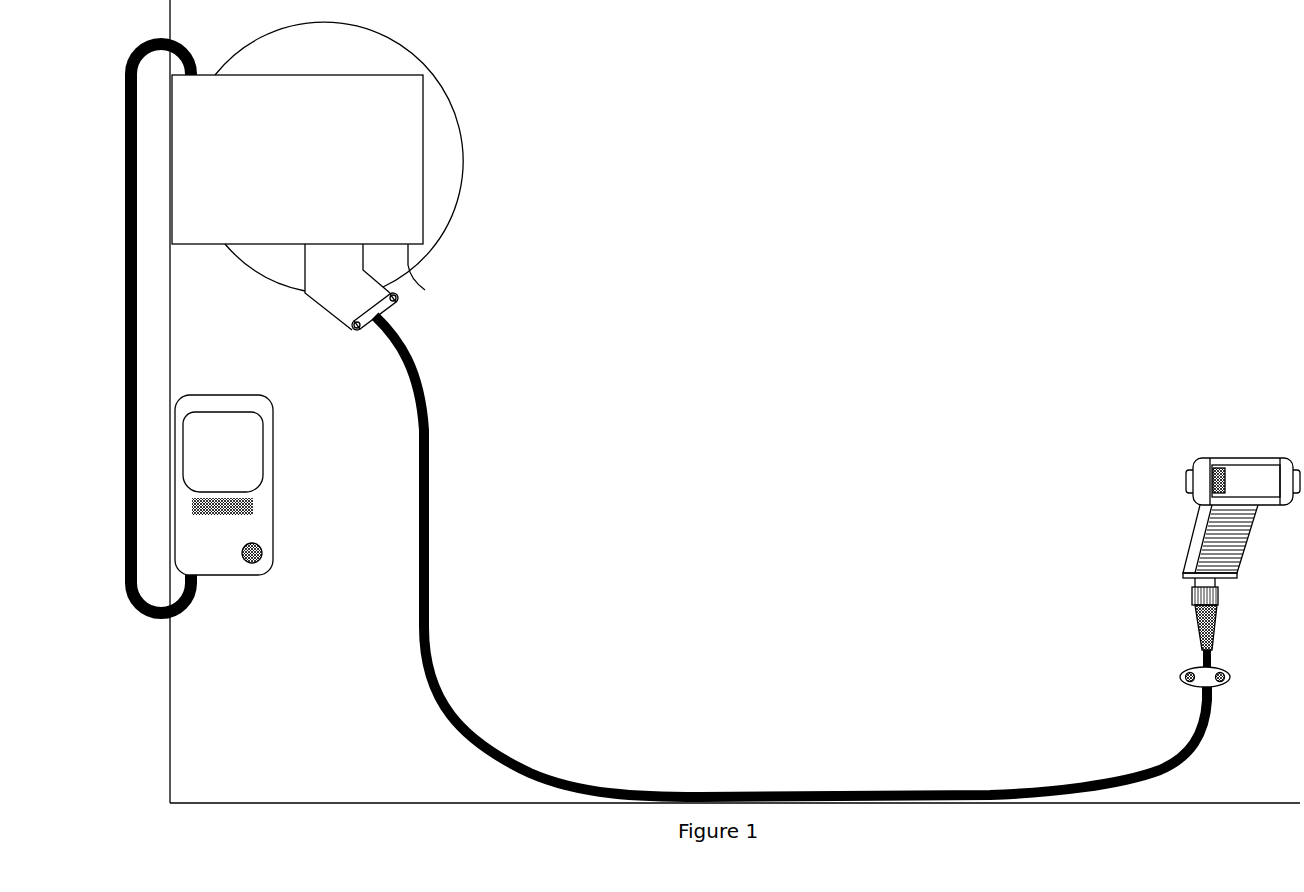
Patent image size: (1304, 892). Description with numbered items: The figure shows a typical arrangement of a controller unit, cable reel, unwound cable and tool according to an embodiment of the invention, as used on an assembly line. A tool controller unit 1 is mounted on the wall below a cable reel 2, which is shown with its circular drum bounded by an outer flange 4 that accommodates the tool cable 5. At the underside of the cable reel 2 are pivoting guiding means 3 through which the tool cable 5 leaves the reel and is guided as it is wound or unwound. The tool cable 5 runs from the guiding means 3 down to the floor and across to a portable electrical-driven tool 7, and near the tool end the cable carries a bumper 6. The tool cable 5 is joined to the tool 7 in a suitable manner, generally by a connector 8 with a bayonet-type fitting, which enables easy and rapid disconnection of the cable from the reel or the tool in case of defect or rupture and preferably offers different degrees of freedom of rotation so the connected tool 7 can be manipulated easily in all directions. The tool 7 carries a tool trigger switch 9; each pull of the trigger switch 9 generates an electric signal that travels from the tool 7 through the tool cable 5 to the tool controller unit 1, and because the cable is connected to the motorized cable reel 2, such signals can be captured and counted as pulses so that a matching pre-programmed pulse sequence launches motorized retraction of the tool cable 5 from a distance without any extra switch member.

The tool controller unit 1 is at (242, 577).
The cable reel 2 is at (425, 290).
The guiding means 3 is at (352, 328).
The outer flange 4 is at (462, 203).
The tool cable 5 is at (843, 787).
The bumper 6 is at (1190, 669).
The portable electrical-driven tool 7 is at (1225, 508).
The connector 8 is at (1192, 597).
The tool trigger switch 9 is at (1257, 528).